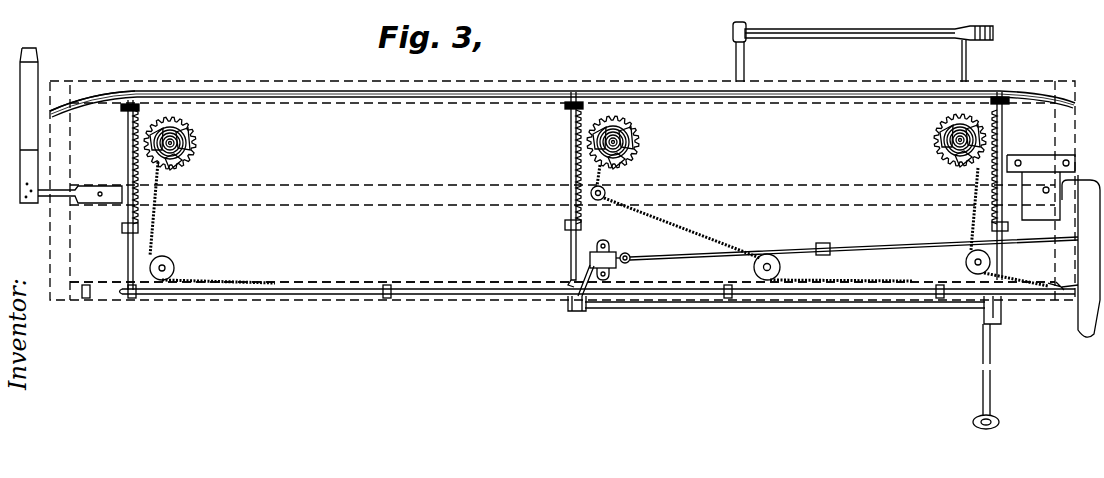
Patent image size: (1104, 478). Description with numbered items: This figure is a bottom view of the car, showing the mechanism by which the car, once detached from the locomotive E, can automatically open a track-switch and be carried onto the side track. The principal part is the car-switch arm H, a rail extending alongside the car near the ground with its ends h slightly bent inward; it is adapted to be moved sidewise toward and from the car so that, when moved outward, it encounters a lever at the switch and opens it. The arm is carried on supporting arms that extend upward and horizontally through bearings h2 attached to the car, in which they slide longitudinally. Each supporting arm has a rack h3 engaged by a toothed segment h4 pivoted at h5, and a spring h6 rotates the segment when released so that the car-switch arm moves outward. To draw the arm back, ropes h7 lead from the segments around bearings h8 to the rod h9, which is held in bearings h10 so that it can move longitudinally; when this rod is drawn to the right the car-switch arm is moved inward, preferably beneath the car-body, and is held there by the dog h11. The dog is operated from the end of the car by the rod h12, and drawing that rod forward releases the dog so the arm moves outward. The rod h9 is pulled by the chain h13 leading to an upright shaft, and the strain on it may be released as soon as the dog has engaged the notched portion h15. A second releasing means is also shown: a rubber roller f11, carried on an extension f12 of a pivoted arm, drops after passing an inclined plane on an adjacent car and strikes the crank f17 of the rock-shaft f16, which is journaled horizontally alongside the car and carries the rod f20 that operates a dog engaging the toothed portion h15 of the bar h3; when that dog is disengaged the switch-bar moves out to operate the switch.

The car-switch arm H is at (294, 92).
The locomotive E is at (457, 161).
The ends of the car-switch arm h is at (92, 101).
The bearings h2 is at (124, 110).
The rack h3 is at (126, 160).
The toothed segment h4 is at (186, 156).
The pivot of the toothed segment h5 is at (186, 143).
The spring h6 is at (172, 136).
The ropes h7 is at (152, 240).
The bearings h8 is at (174, 265).
The rod h9 is at (508, 278).
The bearings h10 is at (134, 296).
The dog h11 is at (596, 253).
The rod h12 is at (886, 242).
The chain h13 is at (1062, 282).
The notched portion h15 is at (588, 258).
The rubber roller f11 is at (972, 421).
The extension f12 is at (556, 300).
The rock-shaft f16 is at (800, 304).
The crank f17 is at (1000, 320).
The rod f20 is at (586, 306).